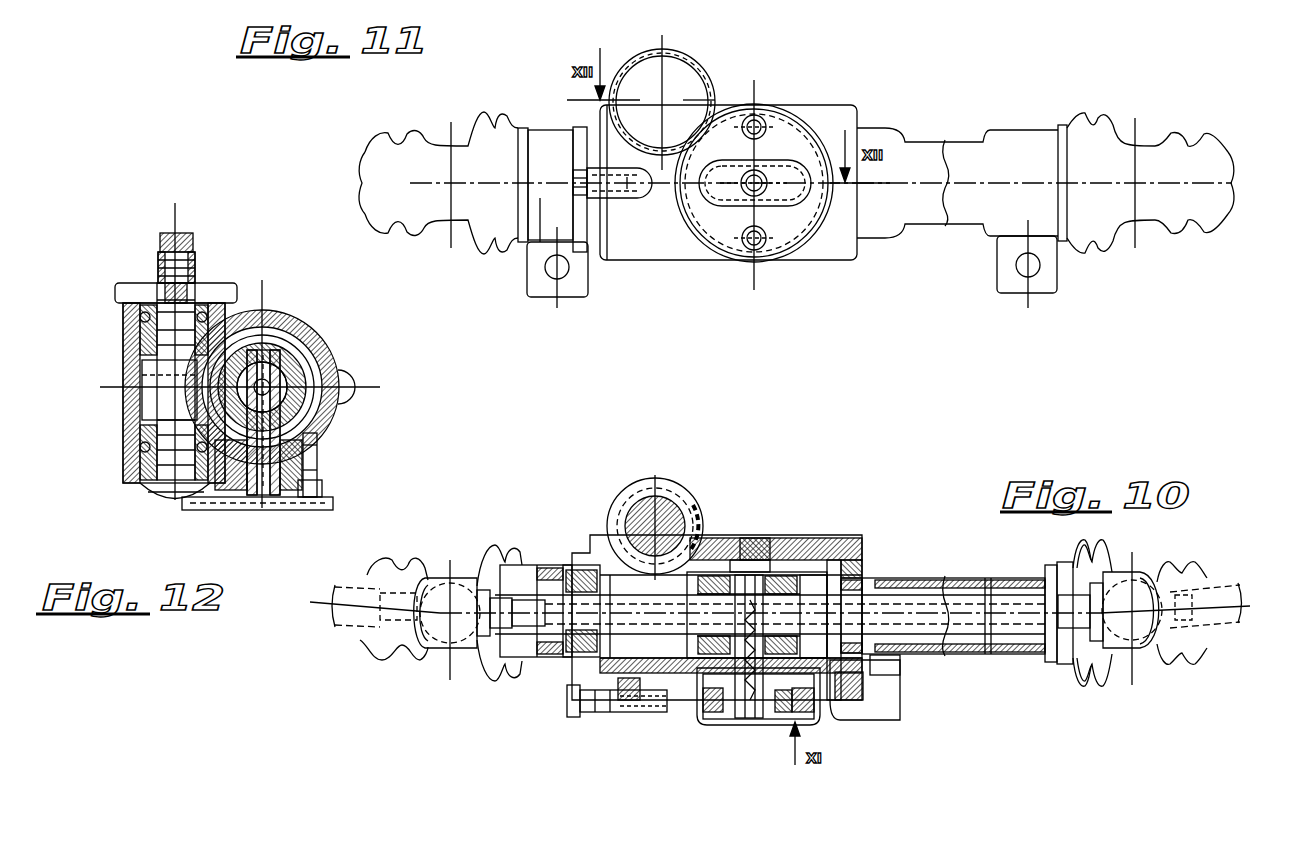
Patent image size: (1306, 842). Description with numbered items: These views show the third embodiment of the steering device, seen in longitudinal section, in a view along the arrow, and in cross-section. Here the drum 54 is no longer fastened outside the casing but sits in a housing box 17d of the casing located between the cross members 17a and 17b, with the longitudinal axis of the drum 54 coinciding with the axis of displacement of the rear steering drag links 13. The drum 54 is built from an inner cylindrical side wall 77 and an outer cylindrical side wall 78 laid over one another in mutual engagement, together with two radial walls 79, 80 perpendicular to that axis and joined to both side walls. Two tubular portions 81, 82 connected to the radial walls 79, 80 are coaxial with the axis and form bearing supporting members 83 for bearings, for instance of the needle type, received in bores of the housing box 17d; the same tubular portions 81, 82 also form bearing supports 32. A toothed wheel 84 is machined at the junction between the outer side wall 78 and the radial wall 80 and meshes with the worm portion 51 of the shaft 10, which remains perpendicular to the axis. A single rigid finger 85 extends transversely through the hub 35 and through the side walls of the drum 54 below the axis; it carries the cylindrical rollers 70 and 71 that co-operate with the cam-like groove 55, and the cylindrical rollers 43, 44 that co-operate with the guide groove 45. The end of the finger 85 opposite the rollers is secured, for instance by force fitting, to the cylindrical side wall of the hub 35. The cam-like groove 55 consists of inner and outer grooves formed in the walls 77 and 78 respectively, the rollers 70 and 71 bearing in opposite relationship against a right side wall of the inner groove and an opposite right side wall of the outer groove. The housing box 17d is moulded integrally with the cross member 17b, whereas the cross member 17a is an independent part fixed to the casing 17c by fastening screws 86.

In FIG. 10, the shaft 10 is at (655, 494).
In FIG. 10, the rear steering drag links 13 is at (920, 600).
In FIG. 10, the cross member 17a is at (556, 600).
In FIG. 10, the cross member 17b is at (960, 580).
In FIG. 11, the casing 17c is at (538, 288).
In FIG. 10, the housing box 17d is at (742, 545).
In FIG. 10, the bearing supports 32 is at (575, 585).
In FIG. 10, the hub 35 is at (758, 560).
In FIG. 10, the cylindrical roller 43 is at (830, 707).
In FIG. 10, the cylindrical roller 44 is at (750, 704).
In FIG. 11, the guide groove 45 is at (758, 186).
In FIG. 12, the guide groove 45 is at (284, 494).
In FIG. 12, the worm portion 51 is at (225, 375).
In FIG. 10, the drum 54 is at (760, 545).
In FIG. 10, the cam-like groove 55 is at (702, 704).
In FIG. 10, the cylindrical roller 70 is at (835, 724).
In FIG. 10, the cylindrical roller 71 is at (742, 650).
In FIG. 10, the inner cylindrical side wall 77 is at (790, 600).
In FIG. 10, the outer cylindrical side wall 78 is at (745, 585).
In FIG. 10, the radial wall 79 is at (838, 562).
In FIG. 10, the radial wall 80 is at (625, 540).
In FIG. 10, the tubular portion 81 is at (860, 590).
In FIG. 10, the tubular portion 82 is at (585, 562).
In FIG. 10, the bearing supporting members 83 is at (620, 692).
In FIG. 10, the toothed wheel 84 is at (690, 525).
In FIG. 11, the rigid finger 85 is at (761, 194).
In FIG. 10, the rigid finger 85 is at (790, 708).
In FIG. 11, the fastening screws 86 is at (592, 170).
In FIG. 10, the fastening screws 86 is at (585, 714).